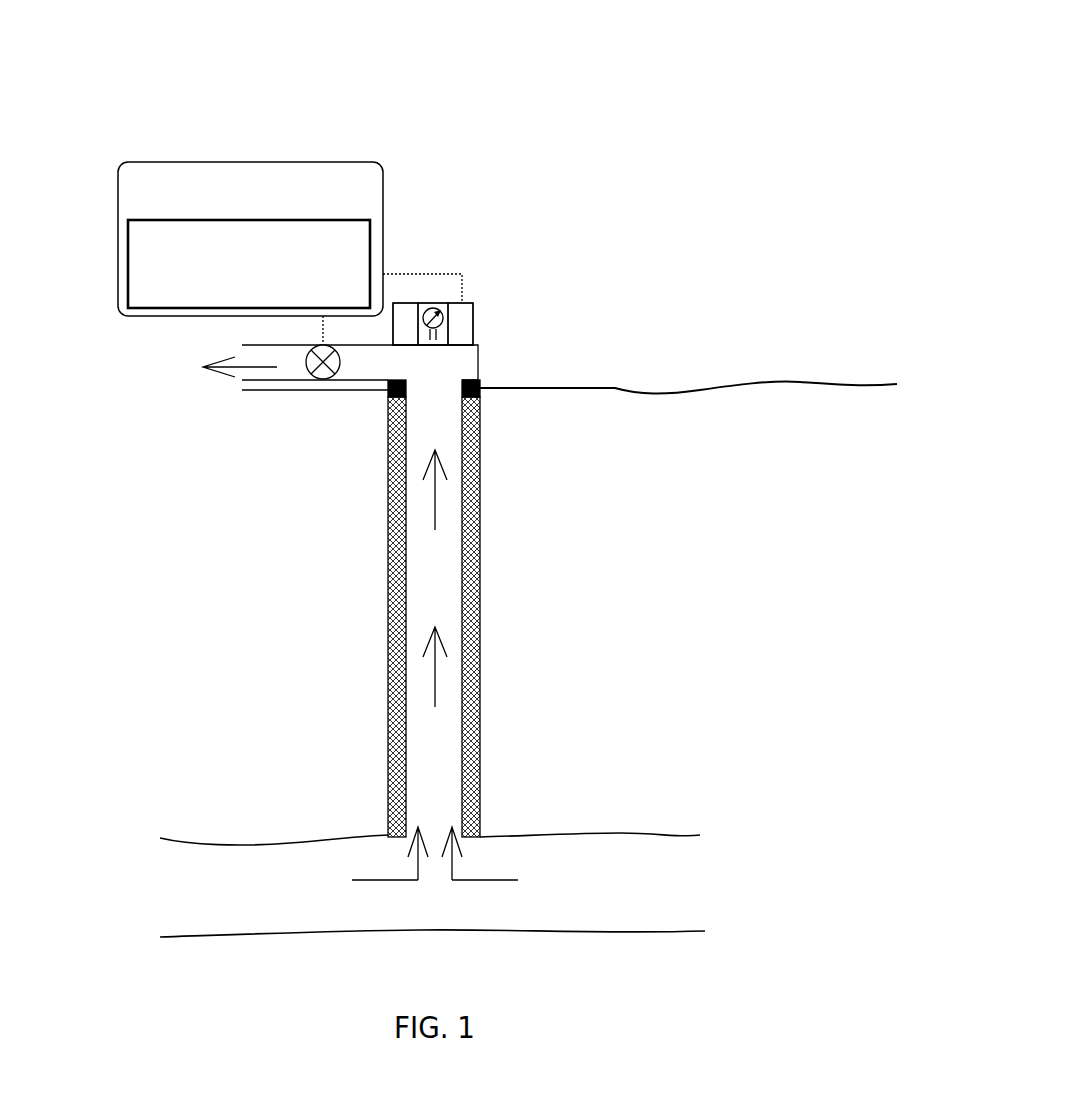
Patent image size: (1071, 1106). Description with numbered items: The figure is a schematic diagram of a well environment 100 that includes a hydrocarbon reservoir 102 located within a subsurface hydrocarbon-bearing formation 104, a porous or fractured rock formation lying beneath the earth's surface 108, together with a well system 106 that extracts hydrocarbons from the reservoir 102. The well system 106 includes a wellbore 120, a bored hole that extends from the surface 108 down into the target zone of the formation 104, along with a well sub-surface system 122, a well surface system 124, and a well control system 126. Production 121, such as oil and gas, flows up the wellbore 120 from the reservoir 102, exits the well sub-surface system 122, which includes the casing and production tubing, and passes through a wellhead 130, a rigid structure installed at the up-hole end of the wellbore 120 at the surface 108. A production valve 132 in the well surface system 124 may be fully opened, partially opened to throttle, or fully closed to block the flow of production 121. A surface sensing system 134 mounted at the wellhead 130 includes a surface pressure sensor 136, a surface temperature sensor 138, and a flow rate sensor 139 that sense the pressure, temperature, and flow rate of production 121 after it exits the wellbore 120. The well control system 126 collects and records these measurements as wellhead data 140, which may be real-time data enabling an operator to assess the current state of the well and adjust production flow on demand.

The well environment 100 is at (572, 34).
The hydrocarbon reservoir 102 is at (607, 903).
The hydrocarbon-bearing formation 104 is at (625, 696).
The well system 106 is at (196, 110).
The surface 108 is at (590, 407).
The wellbore 120 is at (492, 531).
The production 121 is at (165, 391).
The well sub-surface system 122 is at (349, 619).
The well surface system 124 is at (650, 208).
The well control system 126 is at (165, 215).
The wellhead 130 is at (492, 370).
The production valve 132 is at (317, 380).
The surface sensing system 134 is at (486, 316).
The surface pressure sensor 136 is at (432, 303).
The surface temperature sensor 138 is at (462, 303).
The flow rate sensor 139 is at (405, 303).
The wellhead data 140 is at (266, 288).